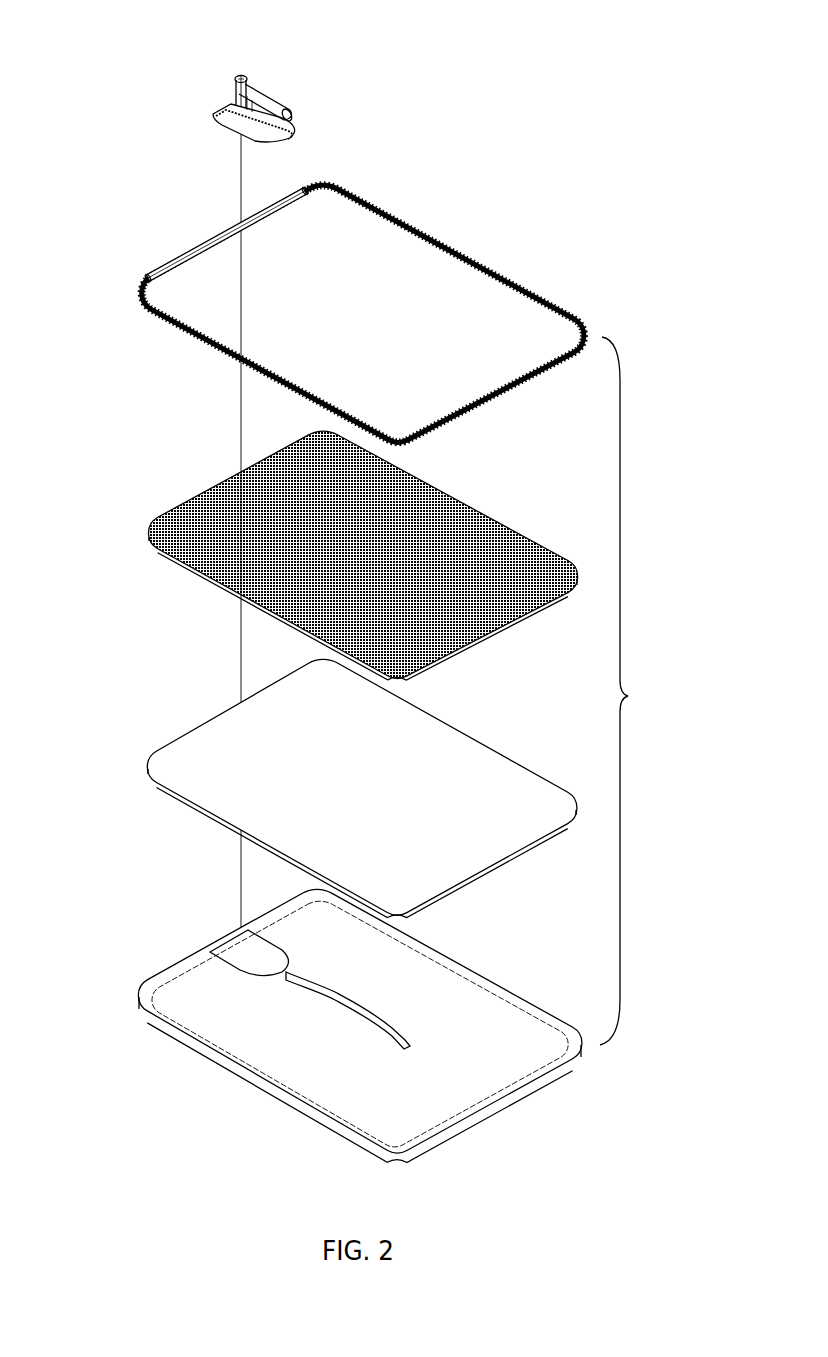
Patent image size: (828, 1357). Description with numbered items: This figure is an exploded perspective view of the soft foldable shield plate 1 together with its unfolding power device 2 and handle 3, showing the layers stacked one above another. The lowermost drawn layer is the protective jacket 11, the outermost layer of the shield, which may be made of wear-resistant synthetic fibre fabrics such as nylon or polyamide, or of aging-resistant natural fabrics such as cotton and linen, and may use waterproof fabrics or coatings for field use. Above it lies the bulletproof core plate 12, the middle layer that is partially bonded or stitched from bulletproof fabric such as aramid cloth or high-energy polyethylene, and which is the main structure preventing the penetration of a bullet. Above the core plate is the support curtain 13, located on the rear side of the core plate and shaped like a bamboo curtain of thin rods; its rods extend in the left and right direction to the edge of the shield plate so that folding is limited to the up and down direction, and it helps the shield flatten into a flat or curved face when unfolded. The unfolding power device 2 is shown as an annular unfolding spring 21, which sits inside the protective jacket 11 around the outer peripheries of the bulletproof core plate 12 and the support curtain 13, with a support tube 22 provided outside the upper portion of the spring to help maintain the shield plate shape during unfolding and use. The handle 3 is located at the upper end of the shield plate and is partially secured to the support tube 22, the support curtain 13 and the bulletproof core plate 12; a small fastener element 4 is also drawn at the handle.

The soft foldable shield plate 1 is at (634, 691).
The unfolding power device 2 is at (331, 302).
The handle 3 is at (240, 120).
The screw 4 is at (240, 88).
The protective jacket 11 is at (305, 1045).
The bulletproof core plate 12 is at (267, 787).
The support curtain 13 is at (248, 547).
The annular unfolding spring 21 is at (392, 214).
The support tube 22 is at (212, 242).